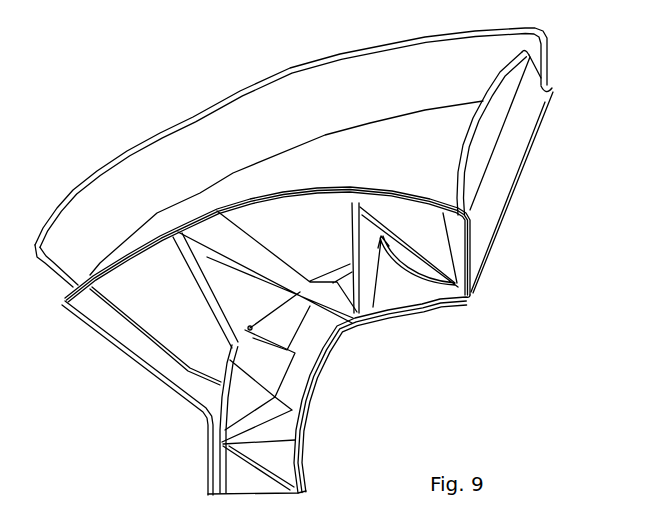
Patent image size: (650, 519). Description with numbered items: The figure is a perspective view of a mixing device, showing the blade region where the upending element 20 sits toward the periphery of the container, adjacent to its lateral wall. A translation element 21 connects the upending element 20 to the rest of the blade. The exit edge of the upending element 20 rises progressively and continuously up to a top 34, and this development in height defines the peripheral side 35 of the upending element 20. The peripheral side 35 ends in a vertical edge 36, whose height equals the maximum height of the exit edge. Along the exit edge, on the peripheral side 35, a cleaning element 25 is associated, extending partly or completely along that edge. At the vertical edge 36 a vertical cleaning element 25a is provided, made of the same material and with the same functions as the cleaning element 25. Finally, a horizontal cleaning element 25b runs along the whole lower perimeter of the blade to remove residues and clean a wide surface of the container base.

The upending element 20 is at (540, 153).
The translation element 21 is at (208, 481).
The cleaning element 25 is at (207, 108).
The vertical cleaning element 25a is at (482, 155).
The horizontal cleaning element 25b is at (118, 348).
The top 34 is at (549, 87).
The peripheral side 35 is at (338, 155).
The vertical edge 36 is at (538, 116).